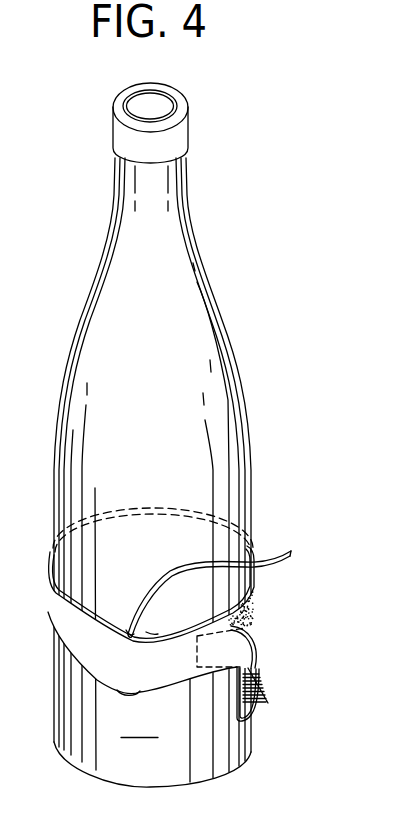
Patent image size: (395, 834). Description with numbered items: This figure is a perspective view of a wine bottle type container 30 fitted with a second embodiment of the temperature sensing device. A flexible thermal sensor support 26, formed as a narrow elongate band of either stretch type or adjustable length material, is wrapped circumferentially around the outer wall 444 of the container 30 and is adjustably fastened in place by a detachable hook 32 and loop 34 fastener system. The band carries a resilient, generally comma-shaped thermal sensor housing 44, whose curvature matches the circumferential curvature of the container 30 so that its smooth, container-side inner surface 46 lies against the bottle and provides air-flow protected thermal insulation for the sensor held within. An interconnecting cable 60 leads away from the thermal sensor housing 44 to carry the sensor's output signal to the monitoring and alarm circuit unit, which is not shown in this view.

The container 30 is at (200, 368).
The flexible thermal sensor support 26 is at (74, 656).
The interconnecting cable 60 is at (280, 548).
The thermal sensor housing 44 is at (113, 625).
The inner surface 46 is at (152, 628).
The loop fastener 34 is at (253, 618).
The hook fastener 32 is at (263, 675).
The outer wall 444 is at (139, 725).